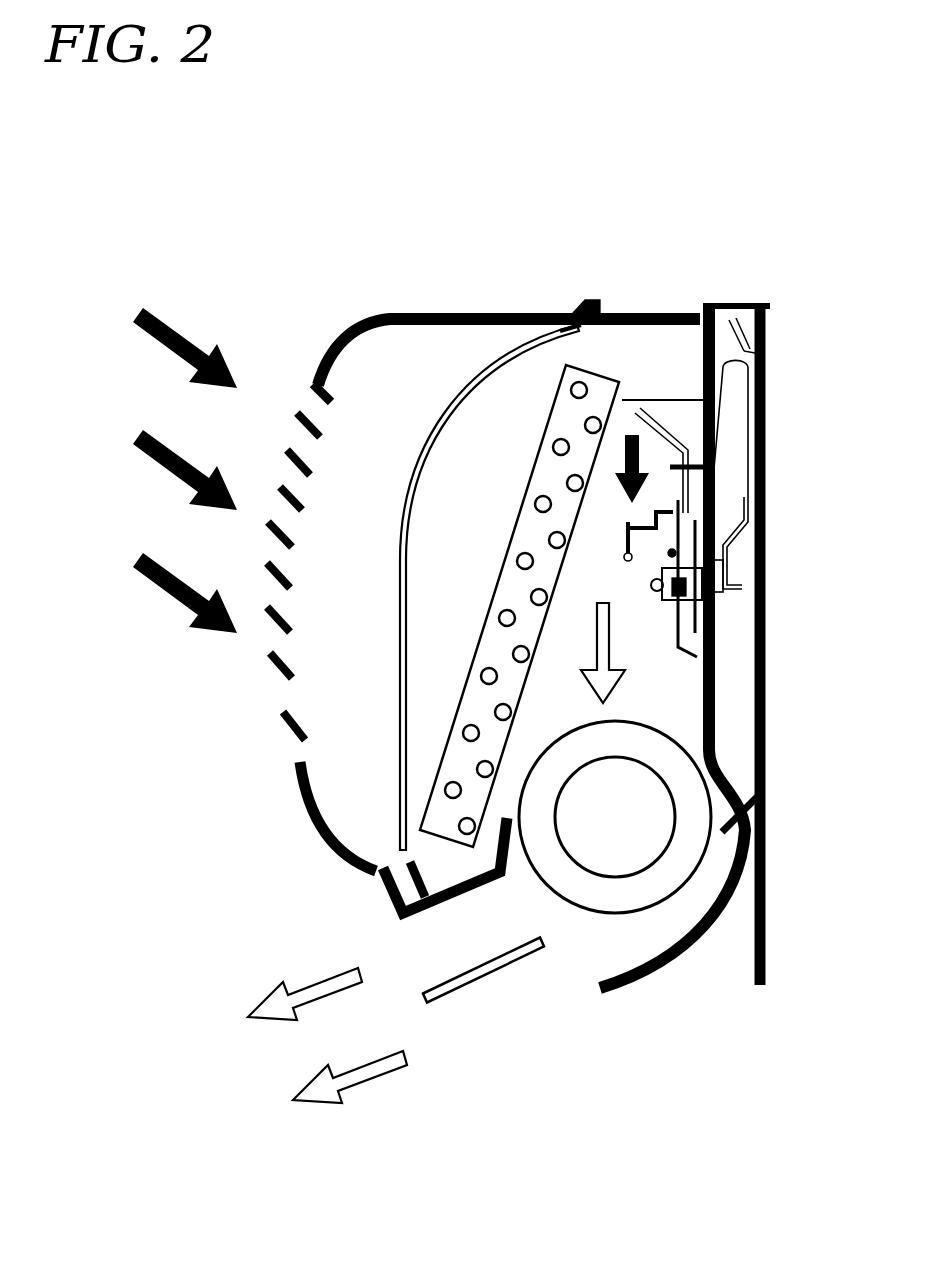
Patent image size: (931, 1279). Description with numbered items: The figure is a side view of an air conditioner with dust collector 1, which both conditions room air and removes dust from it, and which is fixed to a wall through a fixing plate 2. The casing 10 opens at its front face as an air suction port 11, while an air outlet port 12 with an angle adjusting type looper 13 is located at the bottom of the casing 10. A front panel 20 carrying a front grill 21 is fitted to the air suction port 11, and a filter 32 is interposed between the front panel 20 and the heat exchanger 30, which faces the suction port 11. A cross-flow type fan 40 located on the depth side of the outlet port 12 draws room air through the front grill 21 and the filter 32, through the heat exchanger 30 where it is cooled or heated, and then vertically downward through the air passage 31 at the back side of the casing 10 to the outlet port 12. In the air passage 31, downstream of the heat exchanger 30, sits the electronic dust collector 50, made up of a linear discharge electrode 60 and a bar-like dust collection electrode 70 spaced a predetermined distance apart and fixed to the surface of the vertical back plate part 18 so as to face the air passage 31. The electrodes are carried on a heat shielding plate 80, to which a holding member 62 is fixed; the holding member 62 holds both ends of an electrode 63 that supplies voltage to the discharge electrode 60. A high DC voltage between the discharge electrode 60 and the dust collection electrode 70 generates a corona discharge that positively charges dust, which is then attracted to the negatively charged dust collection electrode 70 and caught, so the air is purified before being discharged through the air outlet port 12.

The air conditioner with dust collector 1 is at (288, 209).
The fixing plate 2 is at (765, 560).
The casing 10 is at (688, 305).
The air suction port 11 is at (373, 556).
The air outlet port 12 is at (530, 978).
The angle adjusting type looper 13 is at (455, 996).
The vertical back plate part 18 is at (715, 665).
The front panel 20 is at (528, 320).
The front grill 21 is at (290, 725).
The heat exchanger 30 is at (608, 373).
The air passage 31 is at (570, 632).
The filter 32 is at (471, 382).
The cross-flow type fan 40 is at (620, 905).
The electronic dust collector 50 is at (598, 576).
The discharge electrode 60 is at (630, 560).
The holding member 62 is at (680, 510).
The electrode 63 is at (627, 537).
The dust collection electrode 70 is at (652, 592).
The heat shielding plate 80 is at (680, 427).